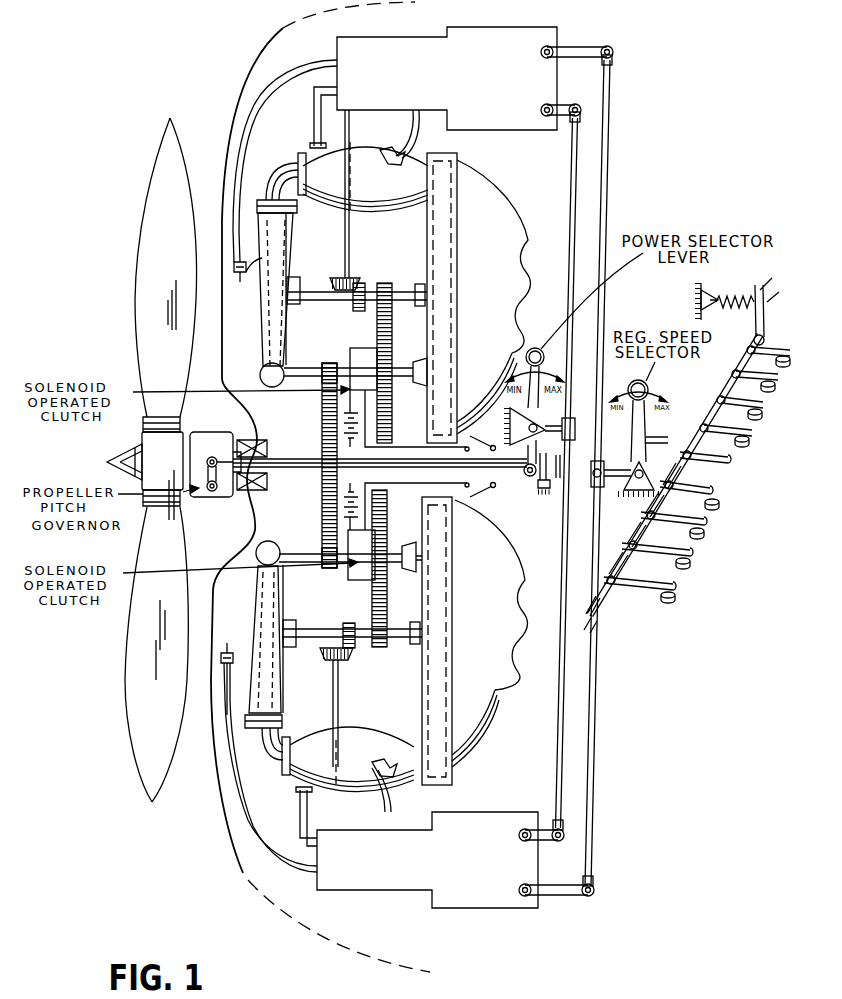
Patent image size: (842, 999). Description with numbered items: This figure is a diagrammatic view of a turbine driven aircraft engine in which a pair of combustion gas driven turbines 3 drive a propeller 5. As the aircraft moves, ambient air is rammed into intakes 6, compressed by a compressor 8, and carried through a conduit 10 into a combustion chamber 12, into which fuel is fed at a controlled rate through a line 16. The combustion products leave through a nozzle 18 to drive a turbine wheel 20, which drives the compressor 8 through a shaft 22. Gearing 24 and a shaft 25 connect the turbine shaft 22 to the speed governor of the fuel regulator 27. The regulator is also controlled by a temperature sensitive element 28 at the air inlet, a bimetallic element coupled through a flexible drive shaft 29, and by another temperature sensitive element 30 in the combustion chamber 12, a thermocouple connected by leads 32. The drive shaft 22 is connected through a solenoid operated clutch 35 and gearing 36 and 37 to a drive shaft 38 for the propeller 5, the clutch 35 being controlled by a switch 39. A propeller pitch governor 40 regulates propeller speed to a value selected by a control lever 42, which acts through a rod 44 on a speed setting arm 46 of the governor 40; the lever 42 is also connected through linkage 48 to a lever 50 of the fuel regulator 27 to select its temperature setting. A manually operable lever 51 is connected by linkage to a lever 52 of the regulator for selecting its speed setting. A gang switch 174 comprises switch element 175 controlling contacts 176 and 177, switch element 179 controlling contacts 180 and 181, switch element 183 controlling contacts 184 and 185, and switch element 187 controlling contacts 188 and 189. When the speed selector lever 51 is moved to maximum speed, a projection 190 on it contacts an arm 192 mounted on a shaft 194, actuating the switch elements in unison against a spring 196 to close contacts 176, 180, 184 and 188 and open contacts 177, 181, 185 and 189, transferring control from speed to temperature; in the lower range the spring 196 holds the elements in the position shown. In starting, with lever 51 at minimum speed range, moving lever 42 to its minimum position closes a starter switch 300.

The combustion gas driven turbine 3 is at (485, 204).
The propeller 5 is at (140, 231).
The intake 6 is at (232, 310).
The compressor 8 is at (278, 253).
The conduit 10 is at (279, 173).
The combustion chamber 12 is at (390, 193).
The fuel line 16 is at (313, 121).
The nozzle 18 is at (431, 161).
The turbine wheel 20 is at (454, 163).
The turbine shaft 22 is at (315, 292).
The gearing 24 is at (361, 281).
The shaft 25 is at (352, 238).
The fuel regulator 27 is at (366, 80).
The temperature sensitive element 28 is at (246, 275).
The flexible drive shaft 29 is at (282, 86).
The temperature sensitive element 30 is at (390, 163).
The leads 32 is at (410, 133).
The solenoid operated clutch 35 is at (362, 349).
The gearing 36 is at (328, 363).
The gearing 37 is at (322, 505).
The propeller drive shaft 38 is at (305, 457).
The switch 39 is at (490, 443).
The propeller pitch governor 40 is at (215, 432).
The control lever 42 is at (536, 348).
The rod 44 is at (526, 474).
The speed setting arm 46 is at (216, 498).
The linkage 48 is at (572, 198).
The lever 50 is at (565, 108).
The manually operable lever 51 is at (633, 440).
The lever 52 is at (572, 47).
The gang switch 174 is at (688, 414).
The switch element 175 is at (684, 482).
The contact 176 is at (721, 505).
The contact 177 is at (714, 490).
The switch element 179 is at (668, 505).
The contact 180 is at (706, 534).
The contact 181 is at (708, 520).
The switch element 183 is at (650, 533).
The contact 184 is at (692, 564).
The contact 185 is at (694, 551).
The switch element 187 is at (632, 565).
The contact 188 is at (677, 598).
The contact 189 is at (677, 586).
The projection 190 is at (690, 412).
The arm 192 is at (731, 459).
The shaft 194 is at (639, 538).
The spring 196 is at (737, 300).
The starter switch 300 is at (550, 502).